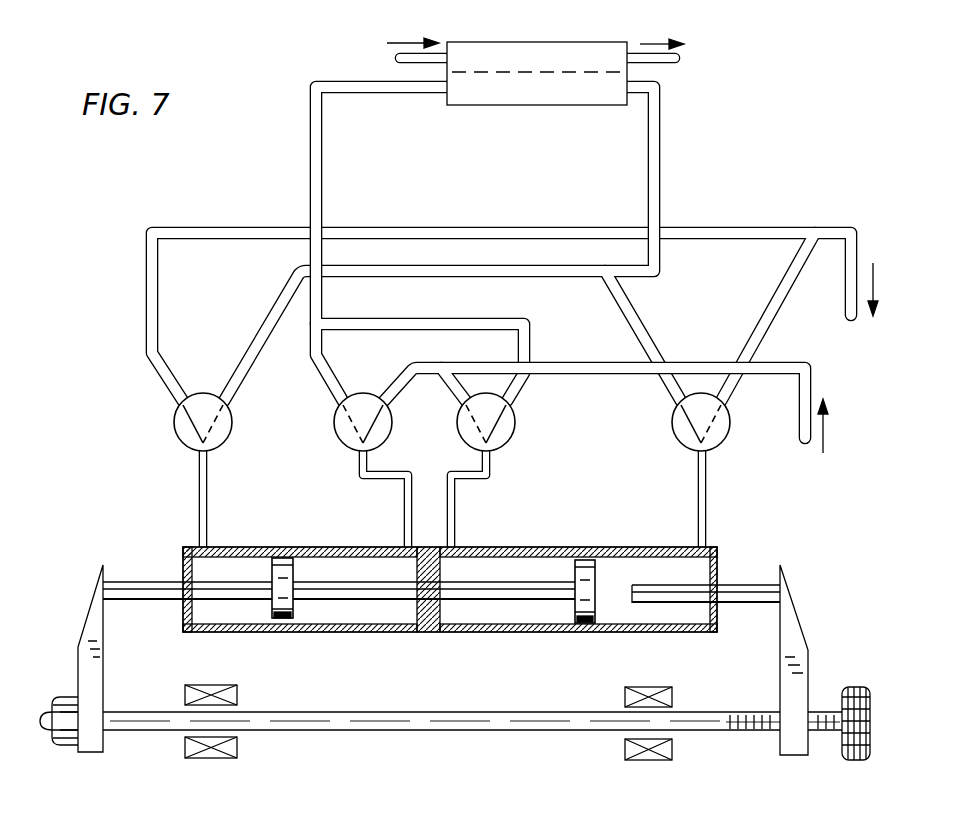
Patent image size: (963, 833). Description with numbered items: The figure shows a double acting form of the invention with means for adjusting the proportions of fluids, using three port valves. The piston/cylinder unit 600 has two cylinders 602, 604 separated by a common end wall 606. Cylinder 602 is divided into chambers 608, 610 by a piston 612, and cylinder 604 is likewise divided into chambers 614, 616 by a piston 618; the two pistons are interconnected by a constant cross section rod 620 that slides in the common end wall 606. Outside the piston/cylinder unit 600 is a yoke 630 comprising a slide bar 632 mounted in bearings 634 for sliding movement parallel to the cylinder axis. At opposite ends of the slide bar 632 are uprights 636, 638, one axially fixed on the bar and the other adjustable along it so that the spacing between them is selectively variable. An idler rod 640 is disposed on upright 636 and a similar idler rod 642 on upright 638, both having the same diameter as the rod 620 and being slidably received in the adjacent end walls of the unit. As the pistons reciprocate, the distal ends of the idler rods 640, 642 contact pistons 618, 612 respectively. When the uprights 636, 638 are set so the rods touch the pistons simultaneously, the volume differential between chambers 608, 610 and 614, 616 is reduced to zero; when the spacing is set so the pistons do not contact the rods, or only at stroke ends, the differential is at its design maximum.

The piston/cylinder unit 600 is at (446, 577).
The cylinder 602 is at (547, 557).
The cylinder 604 is at (290, 547).
The common end wall 606 is at (437, 575).
The chamber 608 is at (517, 567).
The chamber 610 is at (632, 617).
The piston 612 is at (570, 630).
The chamber 614 is at (340, 568).
The chamber 616 is at (230, 568).
The piston 618 is at (277, 630).
The constant cross section rod 620 is at (383, 593).
The yoke 630 is at (455, 683).
The slide bar 632 is at (432, 735).
The bearings 634 is at (210, 758).
The upright 636 is at (93, 677).
The upright 638 is at (790, 622).
The idler rod 640 is at (128, 573).
The idler rod 642 is at (735, 572).